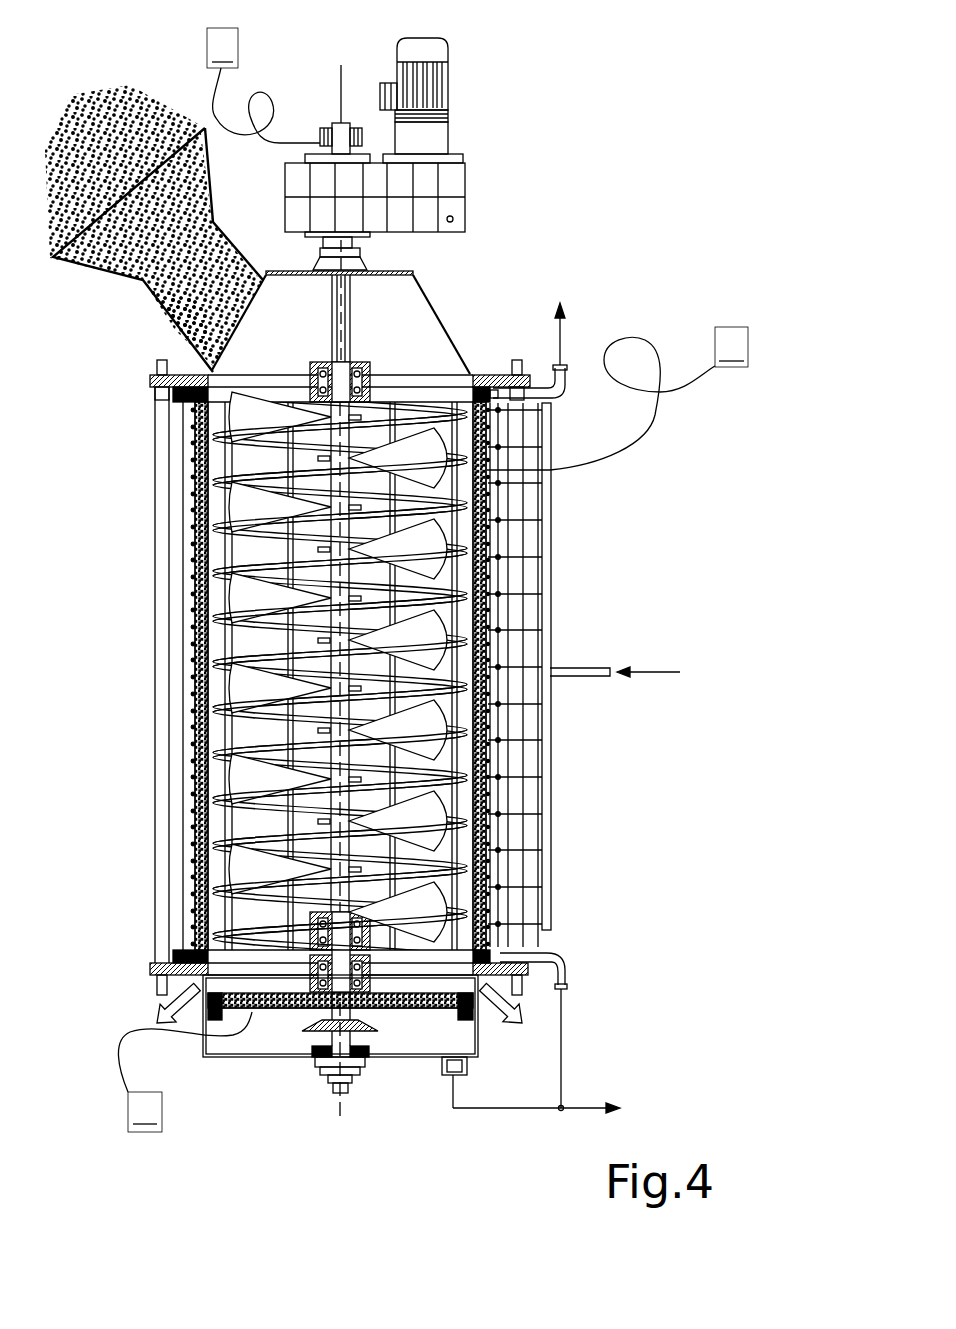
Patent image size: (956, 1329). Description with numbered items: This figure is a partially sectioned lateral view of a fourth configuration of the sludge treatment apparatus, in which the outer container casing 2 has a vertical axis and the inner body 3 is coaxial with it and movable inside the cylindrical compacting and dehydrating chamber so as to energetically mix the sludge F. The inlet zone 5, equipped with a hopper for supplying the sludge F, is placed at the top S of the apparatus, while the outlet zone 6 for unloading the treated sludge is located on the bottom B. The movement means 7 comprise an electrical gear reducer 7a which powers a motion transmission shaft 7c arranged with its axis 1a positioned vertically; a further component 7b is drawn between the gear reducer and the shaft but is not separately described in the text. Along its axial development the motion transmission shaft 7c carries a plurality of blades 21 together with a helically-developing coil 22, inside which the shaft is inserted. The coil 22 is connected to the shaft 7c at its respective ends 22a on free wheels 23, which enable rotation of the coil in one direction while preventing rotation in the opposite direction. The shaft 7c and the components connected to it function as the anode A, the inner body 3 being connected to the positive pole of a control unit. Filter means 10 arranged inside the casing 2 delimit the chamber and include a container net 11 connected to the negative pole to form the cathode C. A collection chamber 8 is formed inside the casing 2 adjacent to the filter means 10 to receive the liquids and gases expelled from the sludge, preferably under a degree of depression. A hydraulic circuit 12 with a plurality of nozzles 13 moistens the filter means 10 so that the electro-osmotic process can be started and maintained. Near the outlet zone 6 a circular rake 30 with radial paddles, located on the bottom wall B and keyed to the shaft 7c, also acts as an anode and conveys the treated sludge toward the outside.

The axis 1a is at (341, 85).
The outer container casing 2 is at (147, 638).
The inner body 3 is at (205, 553).
The inlet zone 5 is at (95, 87).
The outlet zone 6 is at (133, 1008).
The movement means 7 is at (485, 82).
The electrical gear reducer 7a is at (430, 50).
The reduction gearbox 7b is at (455, 177).
The motion transmission shaft 7c is at (347, 291).
The collection chamber 8 is at (190, 463).
The filter means 10 is at (205, 722).
The container net 11 is at (195, 507).
The hydraulic circuit 12 is at (548, 767).
The nozzles 13 is at (497, 741).
The blades 21 is at (255, 412).
The helically-developing coil 22 is at (215, 855).
The ends of the coil 22a is at (392, 364).
The free wheels 23 is at (362, 362).
The circular rake 30 is at (478, 920).
The anode A is at (263, 85).
The bottom B is at (120, 967).
The cathode C is at (433, 729).
The sludge F is at (107, 152).
The top S is at (150, 332).